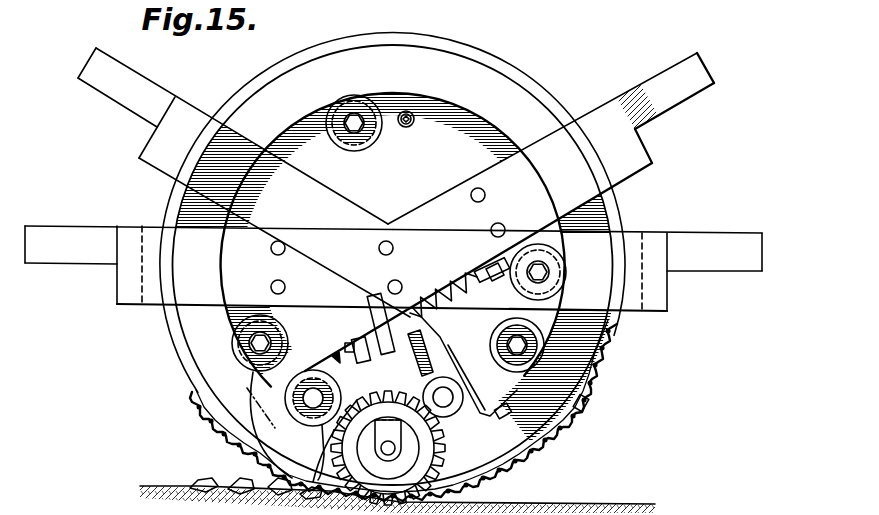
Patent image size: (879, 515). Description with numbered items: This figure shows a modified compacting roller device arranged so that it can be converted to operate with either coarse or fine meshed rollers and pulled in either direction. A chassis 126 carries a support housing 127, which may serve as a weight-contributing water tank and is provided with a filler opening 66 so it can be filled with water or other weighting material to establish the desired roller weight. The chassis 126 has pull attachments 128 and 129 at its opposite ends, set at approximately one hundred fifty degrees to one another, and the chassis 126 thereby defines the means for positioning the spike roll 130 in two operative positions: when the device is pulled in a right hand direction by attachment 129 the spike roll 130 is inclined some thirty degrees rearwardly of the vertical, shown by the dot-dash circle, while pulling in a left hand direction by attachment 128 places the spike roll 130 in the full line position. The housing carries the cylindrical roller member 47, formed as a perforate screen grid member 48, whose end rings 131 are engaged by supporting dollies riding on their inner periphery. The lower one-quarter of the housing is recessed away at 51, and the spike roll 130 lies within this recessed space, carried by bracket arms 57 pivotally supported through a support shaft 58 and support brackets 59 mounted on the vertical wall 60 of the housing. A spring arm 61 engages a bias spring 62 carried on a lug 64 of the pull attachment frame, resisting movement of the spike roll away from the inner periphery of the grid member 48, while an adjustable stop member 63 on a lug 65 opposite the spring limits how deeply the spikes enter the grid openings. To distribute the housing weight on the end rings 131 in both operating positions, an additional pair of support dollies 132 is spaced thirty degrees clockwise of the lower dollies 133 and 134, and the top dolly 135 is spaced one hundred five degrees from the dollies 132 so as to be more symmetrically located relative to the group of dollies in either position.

The cylindrical roller member 47 is at (606, 375).
The screen grid member 48 is at (583, 418).
The recessed space 51 is at (338, 359).
The bracket arms 57 is at (400, 393).
The support shaft 58 is at (448, 412).
The support brackets 59 is at (492, 417).
The vertical wall 60 is at (437, 340).
The spring arm 61 is at (417, 364).
The bias spring 62 is at (428, 292).
The stop member 63 is at (374, 296).
The lug 64 is at (480, 270).
The lug 65 is at (360, 312).
The filler opening 66 is at (407, 128).
The chassis 126 is at (603, 112).
The support housing 127 is at (393, 240).
The pull attachment 128 is at (110, 102).
The pull attachment 129 is at (697, 88).
The spike roll 130 is at (448, 482).
The end rings 131 is at (482, 77).
The support dollies 132 is at (565, 268).
The dolly 133 is at (548, 328).
The dolly 134 is at (233, 345).
The dolly 135 is at (350, 97).